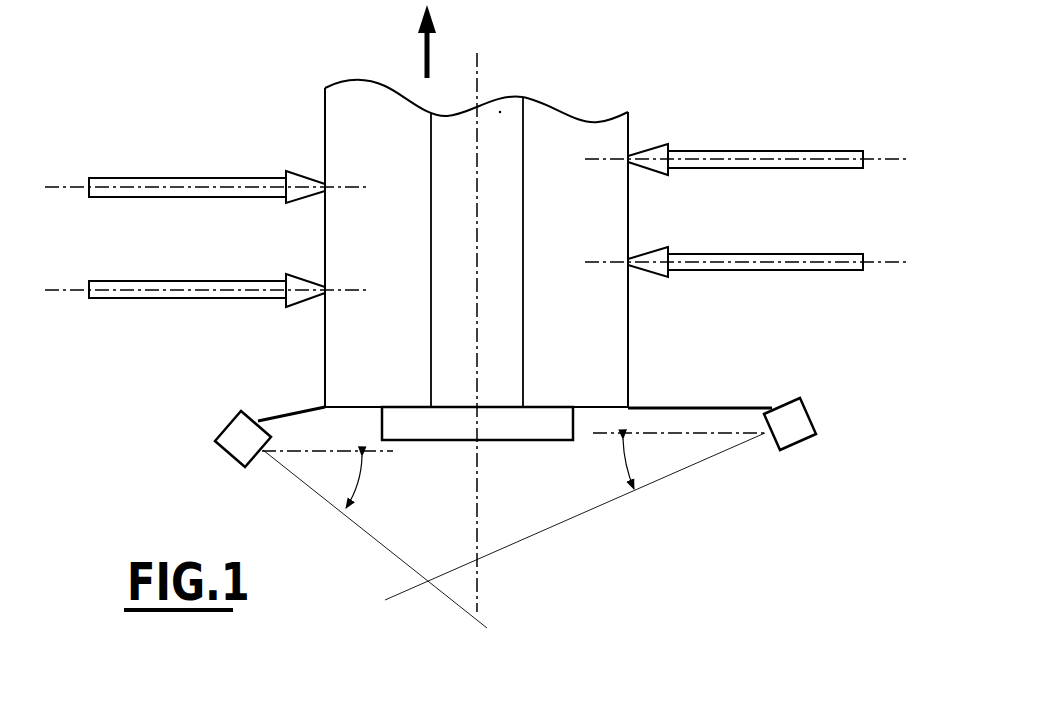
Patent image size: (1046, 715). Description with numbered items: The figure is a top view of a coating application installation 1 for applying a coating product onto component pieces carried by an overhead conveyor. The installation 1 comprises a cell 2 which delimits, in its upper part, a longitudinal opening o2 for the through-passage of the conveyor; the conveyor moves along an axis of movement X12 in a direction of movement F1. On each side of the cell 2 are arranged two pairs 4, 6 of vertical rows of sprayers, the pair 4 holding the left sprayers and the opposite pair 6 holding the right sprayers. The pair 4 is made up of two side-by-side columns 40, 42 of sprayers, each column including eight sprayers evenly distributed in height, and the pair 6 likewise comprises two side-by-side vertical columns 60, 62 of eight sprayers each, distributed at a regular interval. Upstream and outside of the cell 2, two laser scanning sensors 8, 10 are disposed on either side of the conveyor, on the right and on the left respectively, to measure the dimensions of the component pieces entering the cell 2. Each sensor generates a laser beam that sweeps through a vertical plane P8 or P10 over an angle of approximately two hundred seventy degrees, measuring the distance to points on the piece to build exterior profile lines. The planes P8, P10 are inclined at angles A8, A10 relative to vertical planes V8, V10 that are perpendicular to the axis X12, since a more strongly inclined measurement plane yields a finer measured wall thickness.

The coating application installation 1 is at (196, 45).
The cell 2 is at (553, 141).
The pair of vertical rows of sprayers 4 is at (128, 110).
The column of sprayers 40 is at (185, 156).
The column of sprayers 42 is at (84, 259).
The pair of vertical rows of sprayers 6 is at (922, 92).
The column of sprayers 60 is at (781, 136).
The column of sprayers 62 is at (872, 237).
The sensor 8 is at (795, 425).
The sensor 10 is at (235, 437).
The axis of movement X12 is at (480, 314).
The longitudinal opening o2 is at (501, 110).
The direction of movement F1 is at (415, 41).
The vertical plane V10 is at (342, 450).
The vertical plane V8 is at (604, 433).
The angle A10 is at (373, 482).
The angle A8 is at (610, 464).
The vertical plane P10 is at (368, 535).
The vertical plane P8 is at (538, 533).